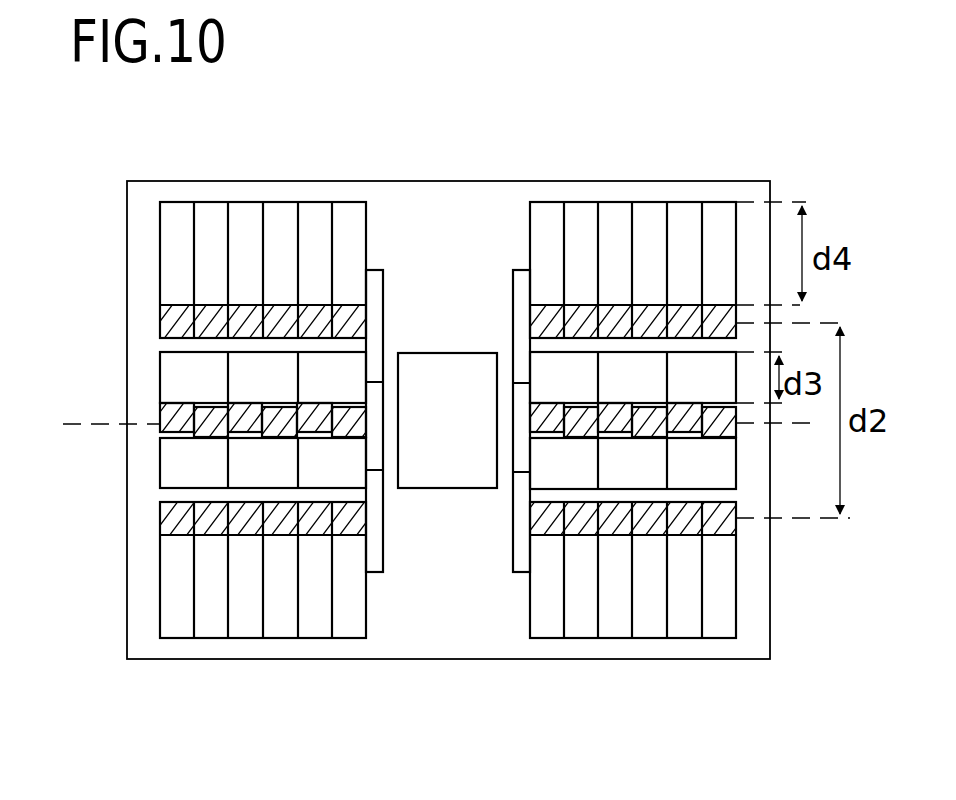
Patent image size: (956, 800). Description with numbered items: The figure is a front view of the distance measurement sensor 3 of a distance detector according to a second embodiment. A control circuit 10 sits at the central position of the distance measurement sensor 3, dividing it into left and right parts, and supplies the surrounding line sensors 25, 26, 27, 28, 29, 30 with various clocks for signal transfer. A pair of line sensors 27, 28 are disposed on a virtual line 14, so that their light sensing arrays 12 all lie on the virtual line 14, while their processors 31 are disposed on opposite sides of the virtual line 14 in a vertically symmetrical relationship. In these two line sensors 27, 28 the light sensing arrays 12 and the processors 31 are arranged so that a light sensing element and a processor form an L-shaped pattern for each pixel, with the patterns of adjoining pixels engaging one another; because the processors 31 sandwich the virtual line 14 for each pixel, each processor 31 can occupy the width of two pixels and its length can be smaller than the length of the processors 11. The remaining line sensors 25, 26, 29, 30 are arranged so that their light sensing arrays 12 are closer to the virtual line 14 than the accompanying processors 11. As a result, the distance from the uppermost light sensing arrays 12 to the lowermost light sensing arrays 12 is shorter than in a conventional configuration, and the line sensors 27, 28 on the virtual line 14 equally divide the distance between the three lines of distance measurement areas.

The distance measurement sensor 3 is at (445, 205).
The control circuit 10 is at (450, 474).
The processor 11 is at (175, 251).
The light sensing array 12 is at (162, 324).
The virtual line 14 is at (67, 424).
The line sensor 25 is at (275, 203).
The line sensor 26 is at (641, 203).
The line sensor 27 is at (160, 468).
The line sensor 28 is at (738, 465).
The line sensor 29 is at (286, 640).
The line sensor 30 is at (653, 640).
The processor 31 is at (353, 380).